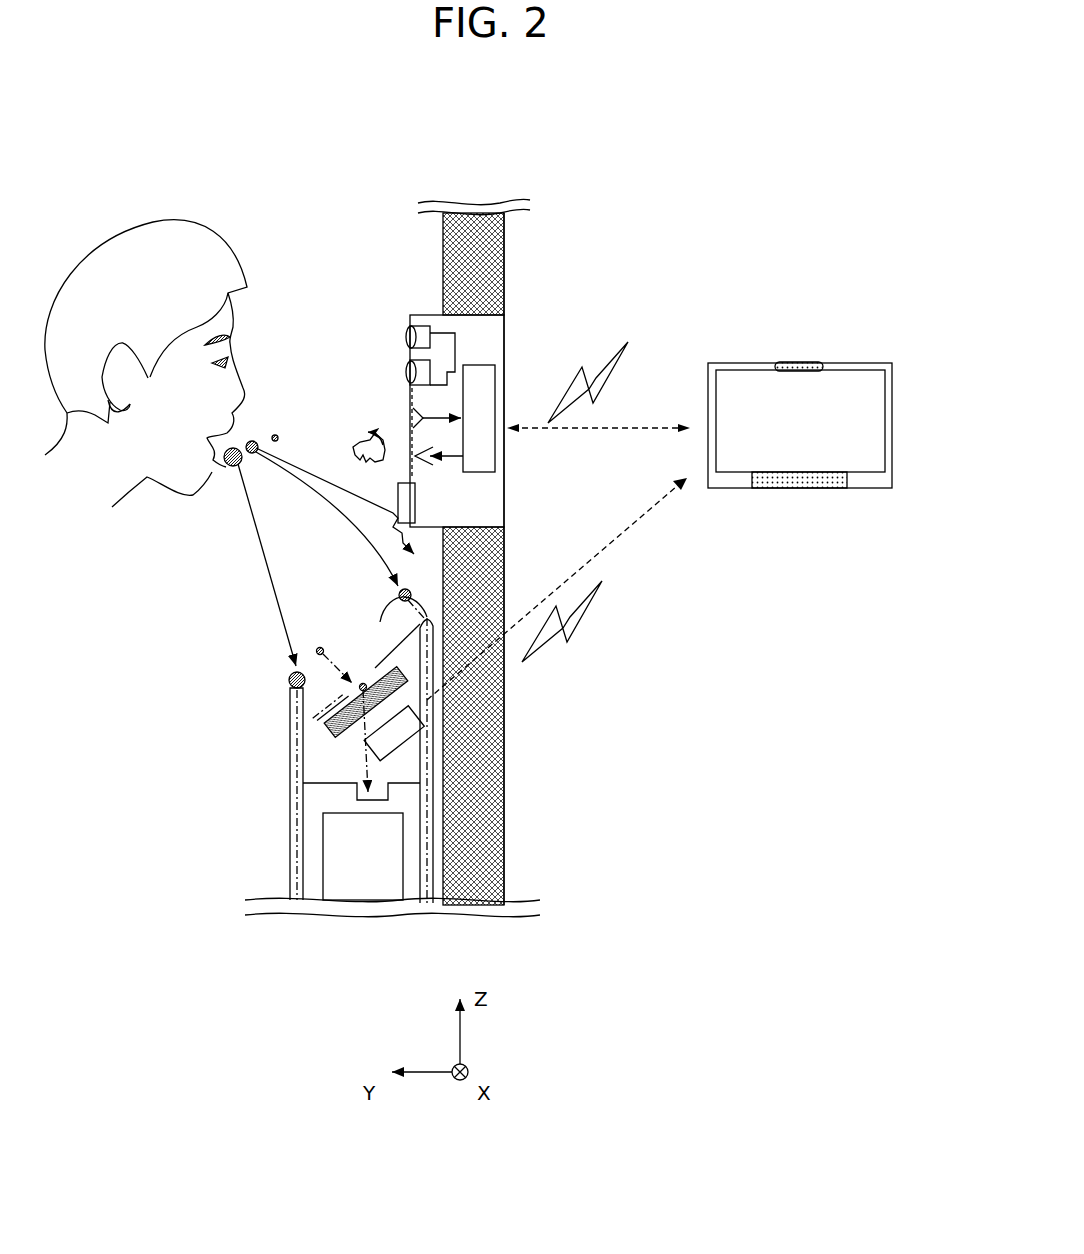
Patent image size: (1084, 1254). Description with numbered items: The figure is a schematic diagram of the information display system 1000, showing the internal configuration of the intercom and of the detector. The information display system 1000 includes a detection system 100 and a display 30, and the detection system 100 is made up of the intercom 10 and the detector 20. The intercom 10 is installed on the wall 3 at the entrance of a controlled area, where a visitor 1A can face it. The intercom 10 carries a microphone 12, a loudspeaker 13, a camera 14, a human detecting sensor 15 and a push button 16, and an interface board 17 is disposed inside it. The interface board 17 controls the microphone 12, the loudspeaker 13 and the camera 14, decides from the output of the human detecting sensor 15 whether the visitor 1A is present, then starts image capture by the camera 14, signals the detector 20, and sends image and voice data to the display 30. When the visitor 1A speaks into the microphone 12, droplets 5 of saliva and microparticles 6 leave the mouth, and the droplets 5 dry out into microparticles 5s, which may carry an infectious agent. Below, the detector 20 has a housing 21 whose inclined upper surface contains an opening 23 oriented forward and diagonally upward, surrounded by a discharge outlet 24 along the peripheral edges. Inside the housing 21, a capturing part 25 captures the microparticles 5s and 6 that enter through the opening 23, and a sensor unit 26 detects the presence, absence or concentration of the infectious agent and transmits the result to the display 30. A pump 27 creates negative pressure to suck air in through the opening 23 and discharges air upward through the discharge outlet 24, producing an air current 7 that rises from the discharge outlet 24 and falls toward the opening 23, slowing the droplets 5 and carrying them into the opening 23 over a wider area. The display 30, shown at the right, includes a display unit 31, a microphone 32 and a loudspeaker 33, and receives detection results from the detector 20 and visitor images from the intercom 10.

The visitor 1A is at (145, 223).
The wall 3 is at (443, 236).
The droplets 5 is at (233, 467).
The microparticles 5s is at (318, 648).
The microparticles 6 is at (353, 447).
The air current 7 is at (380, 620).
The intercom 10 is at (563, 290).
The microphone 12 is at (412, 412).
The loudspeaker 13 is at (420, 470).
The camera 14 is at (410, 368).
The human detecting sensor 15 is at (410, 333).
The push button 16 is at (410, 512).
The interface board 17 is at (482, 367).
The detector 20 is at (188, 650).
The housing 21 is at (432, 737).
The opening 23 is at (358, 670).
The discharge outlet 24 is at (292, 708).
The capturing part 25 is at (330, 728).
The sensor unit 26 is at (375, 755).
The pump 27 is at (323, 842).
The display 30 is at (843, 362).
The display unit 31 is at (876, 416).
The microphone 32 is at (799, 361).
The loudspeaker 33 is at (796, 489).
The detection system 100 is at (650, 227).
The information display system 1000 is at (777, 151).